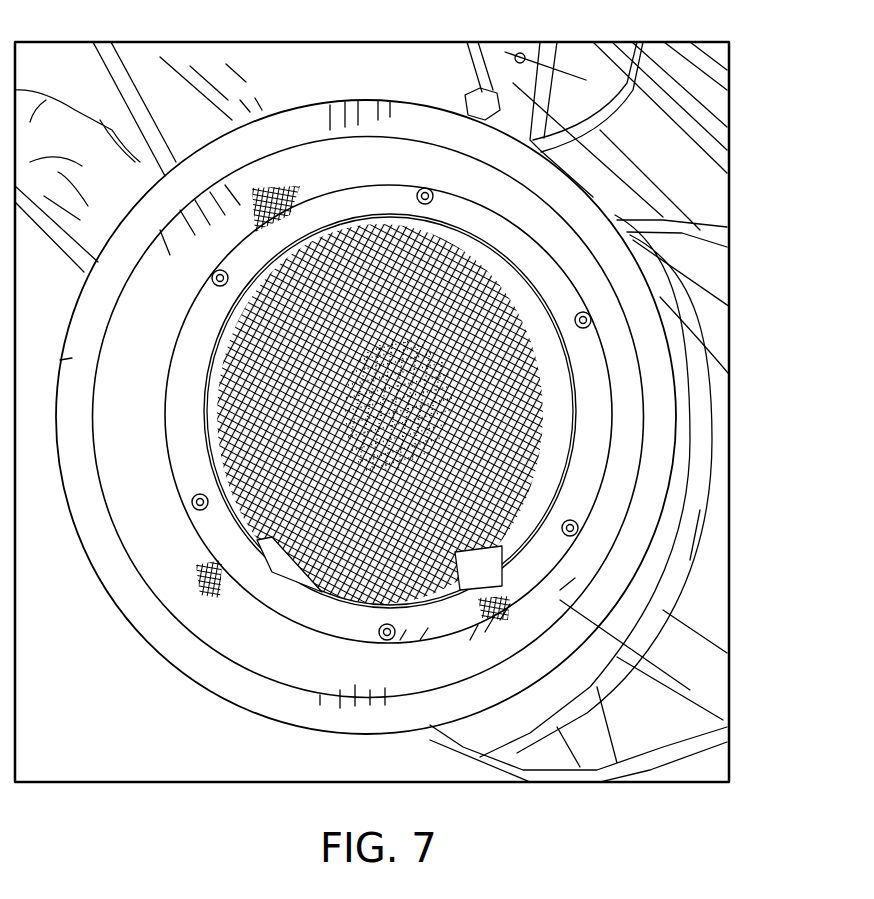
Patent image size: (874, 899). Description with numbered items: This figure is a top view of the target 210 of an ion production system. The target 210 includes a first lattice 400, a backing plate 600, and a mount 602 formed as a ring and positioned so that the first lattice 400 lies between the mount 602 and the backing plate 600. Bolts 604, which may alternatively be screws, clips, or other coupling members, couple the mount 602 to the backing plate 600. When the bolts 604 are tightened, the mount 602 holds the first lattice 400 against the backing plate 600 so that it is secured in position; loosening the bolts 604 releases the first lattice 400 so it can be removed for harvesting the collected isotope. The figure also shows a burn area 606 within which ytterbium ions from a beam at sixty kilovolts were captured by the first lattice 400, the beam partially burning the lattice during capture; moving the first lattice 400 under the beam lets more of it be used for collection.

The target 210 is at (124, 31).
The first lattice 400 is at (510, 448).
The backing plate 600 is at (627, 470).
The mount 602 is at (537, 565).
The bolts 604 is at (577, 540).
The burn area 606 is at (400, 388).